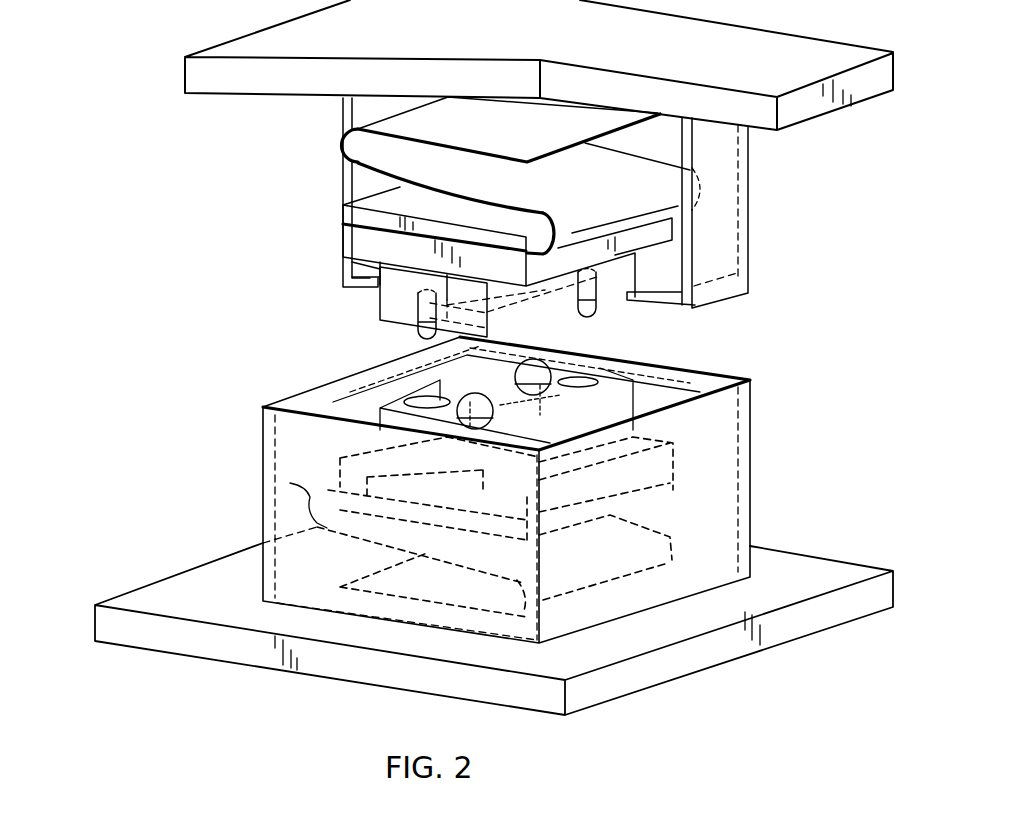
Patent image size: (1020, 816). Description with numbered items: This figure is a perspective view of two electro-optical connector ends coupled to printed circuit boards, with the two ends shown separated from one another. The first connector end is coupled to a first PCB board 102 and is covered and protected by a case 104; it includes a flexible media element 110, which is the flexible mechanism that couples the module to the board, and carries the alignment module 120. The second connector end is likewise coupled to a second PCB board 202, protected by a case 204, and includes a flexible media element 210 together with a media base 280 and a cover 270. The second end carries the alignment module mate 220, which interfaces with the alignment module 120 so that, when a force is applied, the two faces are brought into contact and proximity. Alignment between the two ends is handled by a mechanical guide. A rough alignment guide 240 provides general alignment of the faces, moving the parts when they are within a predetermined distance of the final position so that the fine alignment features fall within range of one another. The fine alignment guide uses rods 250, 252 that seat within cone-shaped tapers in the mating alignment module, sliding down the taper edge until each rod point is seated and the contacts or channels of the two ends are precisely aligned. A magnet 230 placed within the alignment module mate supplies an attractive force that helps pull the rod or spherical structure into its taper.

The first PCB board 102 is at (93, 620).
The case 104 is at (753, 477).
The flexible media element 110 is at (290, 483).
The alignment module 120 is at (333, 412).
The second PCB board 202 is at (185, 80).
The case 204 is at (750, 250).
The flexible media element 210 is at (343, 150).
The alignment module mate 220 is at (380, 300).
The magnet 230 is at (375, 268).
The rough alignment guide 240 is at (520, 338).
The rod 250 is at (420, 332).
The rod 252 is at (600, 318).
The cover 270 is at (343, 244).
The media base 280 is at (343, 214).